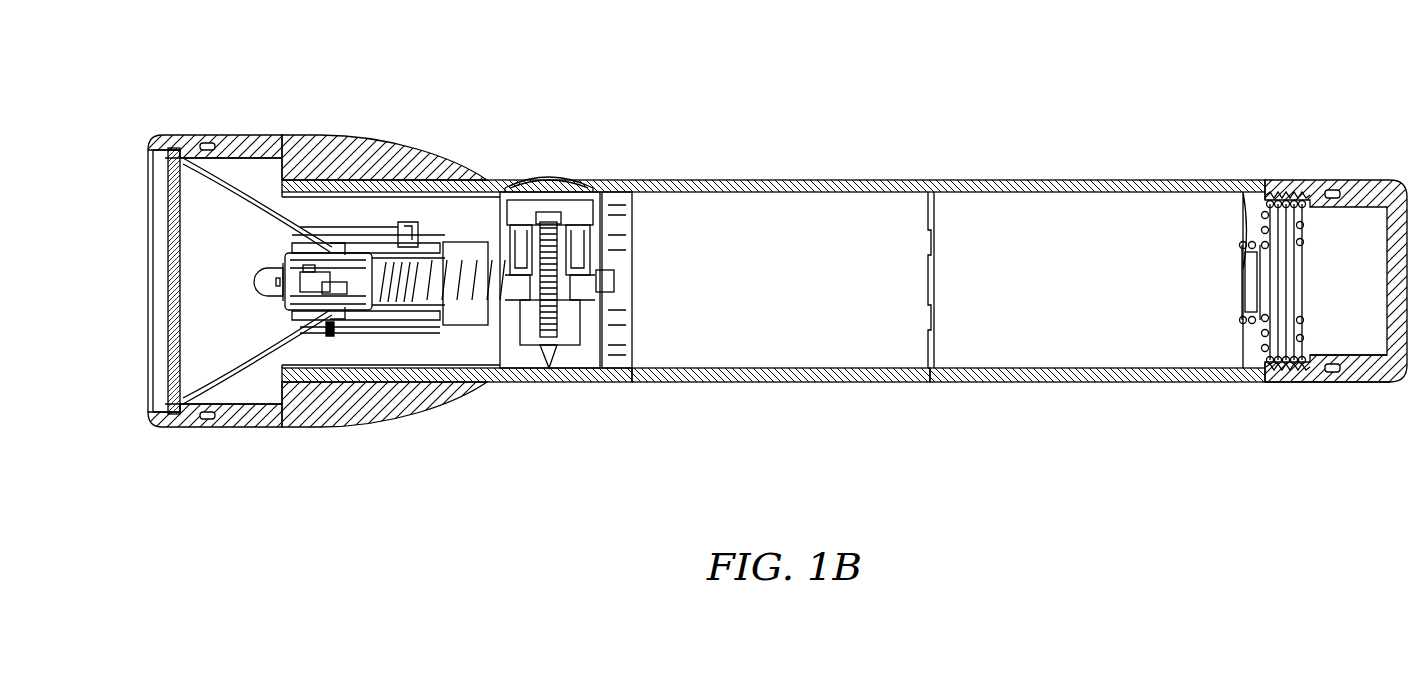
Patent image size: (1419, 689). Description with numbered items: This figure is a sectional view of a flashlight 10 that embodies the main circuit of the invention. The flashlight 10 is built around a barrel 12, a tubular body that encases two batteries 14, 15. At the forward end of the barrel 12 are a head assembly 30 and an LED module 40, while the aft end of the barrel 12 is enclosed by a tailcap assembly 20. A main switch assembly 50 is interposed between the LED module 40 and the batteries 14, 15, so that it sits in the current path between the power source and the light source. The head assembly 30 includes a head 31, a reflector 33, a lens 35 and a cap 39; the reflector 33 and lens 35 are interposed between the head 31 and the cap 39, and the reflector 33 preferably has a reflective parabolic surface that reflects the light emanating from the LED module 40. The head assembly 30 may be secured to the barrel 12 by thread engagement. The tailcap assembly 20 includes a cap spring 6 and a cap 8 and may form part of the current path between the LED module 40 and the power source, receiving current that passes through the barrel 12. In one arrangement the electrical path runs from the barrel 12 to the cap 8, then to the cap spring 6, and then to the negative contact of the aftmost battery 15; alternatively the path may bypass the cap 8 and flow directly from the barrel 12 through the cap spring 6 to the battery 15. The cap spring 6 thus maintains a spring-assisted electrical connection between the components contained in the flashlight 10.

The flashlight 10 is at (753, 108).
The barrel 12 is at (898, 180).
The battery 14 is at (777, 382).
The battery 15 is at (1100, 382).
The cap spring 6 is at (1243, 205).
The cap 8 is at (1362, 385).
The tailcap assembly 20 is at (1359, 170).
The head assembly 30 is at (318, 130).
The head 31 is at (258, 135).
The reflector 33 is at (250, 378).
The lens 35 is at (170, 237).
The cap 39 is at (180, 427).
The LED module 40 is at (330, 335).
The main switch assembly 50 is at (547, 168).